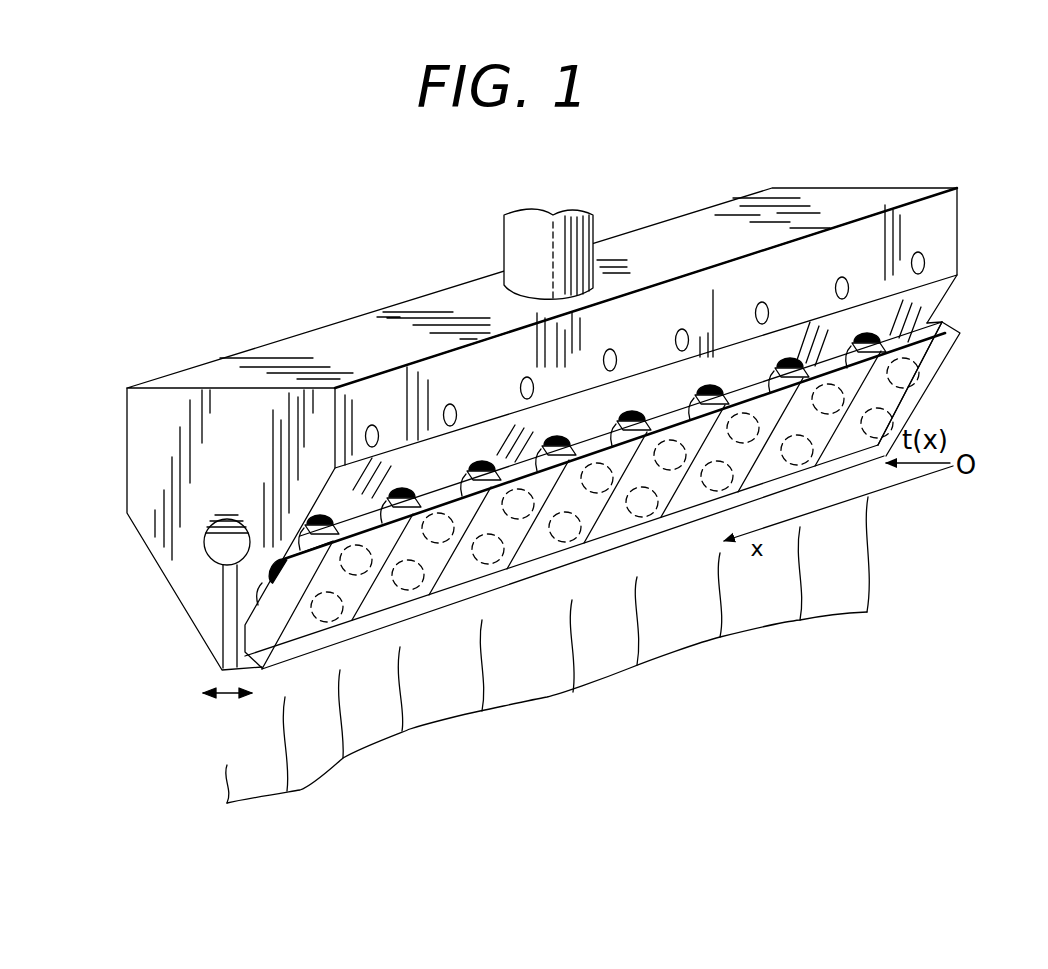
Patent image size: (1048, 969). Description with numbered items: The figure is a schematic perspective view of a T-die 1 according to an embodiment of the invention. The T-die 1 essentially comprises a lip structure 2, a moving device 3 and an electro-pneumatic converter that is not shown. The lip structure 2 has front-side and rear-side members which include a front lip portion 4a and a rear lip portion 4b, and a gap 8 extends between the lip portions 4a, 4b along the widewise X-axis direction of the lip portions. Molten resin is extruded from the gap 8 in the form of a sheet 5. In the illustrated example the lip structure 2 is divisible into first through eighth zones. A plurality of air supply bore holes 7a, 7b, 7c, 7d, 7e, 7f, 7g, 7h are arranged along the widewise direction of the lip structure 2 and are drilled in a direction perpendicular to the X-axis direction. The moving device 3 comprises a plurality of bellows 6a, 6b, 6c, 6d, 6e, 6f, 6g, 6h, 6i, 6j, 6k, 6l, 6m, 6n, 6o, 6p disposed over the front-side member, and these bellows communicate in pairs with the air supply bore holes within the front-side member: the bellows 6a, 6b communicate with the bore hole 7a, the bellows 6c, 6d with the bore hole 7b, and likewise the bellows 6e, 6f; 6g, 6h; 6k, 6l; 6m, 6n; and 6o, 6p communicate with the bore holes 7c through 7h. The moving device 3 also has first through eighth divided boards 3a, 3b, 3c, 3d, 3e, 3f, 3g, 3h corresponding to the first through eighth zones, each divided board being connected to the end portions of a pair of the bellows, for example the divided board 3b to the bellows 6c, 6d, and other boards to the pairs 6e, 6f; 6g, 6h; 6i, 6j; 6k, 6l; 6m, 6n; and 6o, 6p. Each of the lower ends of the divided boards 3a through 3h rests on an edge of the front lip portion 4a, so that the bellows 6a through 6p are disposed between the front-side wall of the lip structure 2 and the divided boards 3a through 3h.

The T-die 1 is at (262, 292).
The lip structure 2 is at (945, 215).
The moving device 3 is at (948, 356).
The divided board 3a is at (352, 602).
The divided board 3b is at (462, 507).
The divided board 3c is at (512, 543).
The divided board 3d is at (614, 445).
The divided board 3e is at (616, 520).
The divided board 3f is at (772, 395).
The divided board 3g is at (830, 440).
The divided board 3h is at (950, 328).
The front lip portion 4a is at (245, 590).
The rear lip portion 4b is at (160, 574).
The sheet 5 is at (855, 590).
The bellows 6a is at (315, 512).
The bellows 6b is at (280, 565).
The bellows 6c is at (400, 485).
The bellows 6d is at (416, 592).
The bellows 6e is at (480, 458).
The bellows 6f is at (496, 566).
The bellows 6g is at (552, 433).
The bellows 6h is at (576, 545).
The bellows 6i is at (632, 408).
The bellows 6j is at (647, 518).
The bellows 6k is at (710, 382).
The bellows 6l is at (710, 492).
The bellows 6m is at (790, 355).
The bellows 6n is at (803, 467).
The bellows 6o is at (865, 330).
The bellows 6p is at (895, 420).
The air supply bore hole 7a is at (368, 424).
The air supply bore hole 7b is at (446, 403).
The air supply bore hole 7c is at (524, 377).
The air supply bore hole 7d is at (610, 348).
The air supply bore hole 7e is at (682, 328).
The air supply bore hole 7f is at (762, 301).
The air supply bore hole 7g is at (842, 276).
The air supply bore hole 7h is at (918, 251).
The gap 8 is at (233, 693).